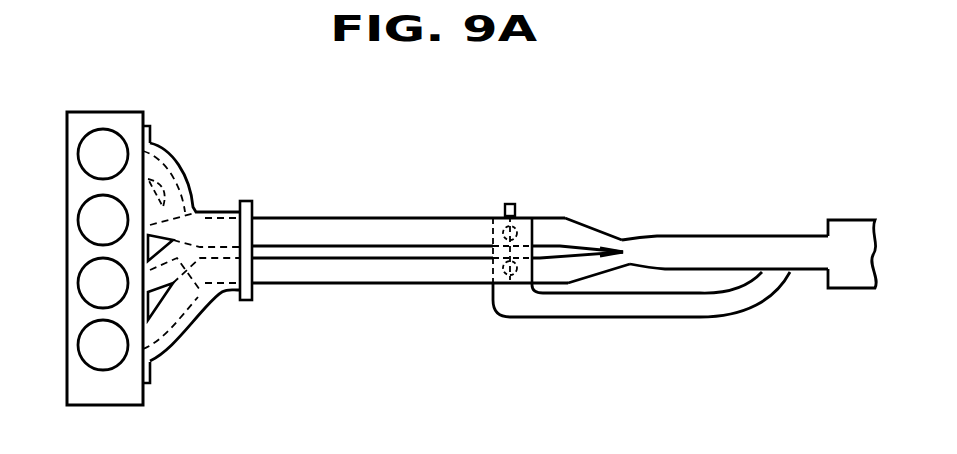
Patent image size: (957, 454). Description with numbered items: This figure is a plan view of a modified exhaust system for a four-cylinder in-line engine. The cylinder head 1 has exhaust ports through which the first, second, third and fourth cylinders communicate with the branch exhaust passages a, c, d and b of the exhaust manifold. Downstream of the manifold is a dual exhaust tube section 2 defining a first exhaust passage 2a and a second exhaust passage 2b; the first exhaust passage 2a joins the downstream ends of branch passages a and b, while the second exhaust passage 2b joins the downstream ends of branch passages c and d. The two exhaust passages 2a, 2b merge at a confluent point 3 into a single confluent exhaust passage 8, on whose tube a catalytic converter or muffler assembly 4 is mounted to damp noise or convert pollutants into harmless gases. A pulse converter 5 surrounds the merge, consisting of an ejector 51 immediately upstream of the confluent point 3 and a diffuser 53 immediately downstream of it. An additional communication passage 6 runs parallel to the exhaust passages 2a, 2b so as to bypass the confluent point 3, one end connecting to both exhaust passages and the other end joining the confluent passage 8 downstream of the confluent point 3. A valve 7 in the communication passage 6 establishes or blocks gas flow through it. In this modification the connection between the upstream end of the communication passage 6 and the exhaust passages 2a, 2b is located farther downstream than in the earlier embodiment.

The cylinder head 1 is at (122, 112).
The branch exhaust passage a is at (167, 173).
The branch exhaust passage b is at (177, 338).
The branch exhaust passage c is at (193, 207).
The branch exhaust passage d is at (177, 260).
The dual exhaust tube section 2 is at (416, 231).
The first exhaust passage 2a is at (373, 275).
The second exhaust passage 2b is at (368, 228).
The valve 7 is at (510, 204).
The pulse converter 5 is at (620, 245).
The ejector 51 is at (617, 217).
The diffuser 53 is at (668, 219).
The confluent point 3 is at (638, 257).
The communication passage 6 is at (598, 313).
The confluent exhaust passage 8 is at (790, 238).
The catalytic converter or muffler assembly 4 is at (847, 290).